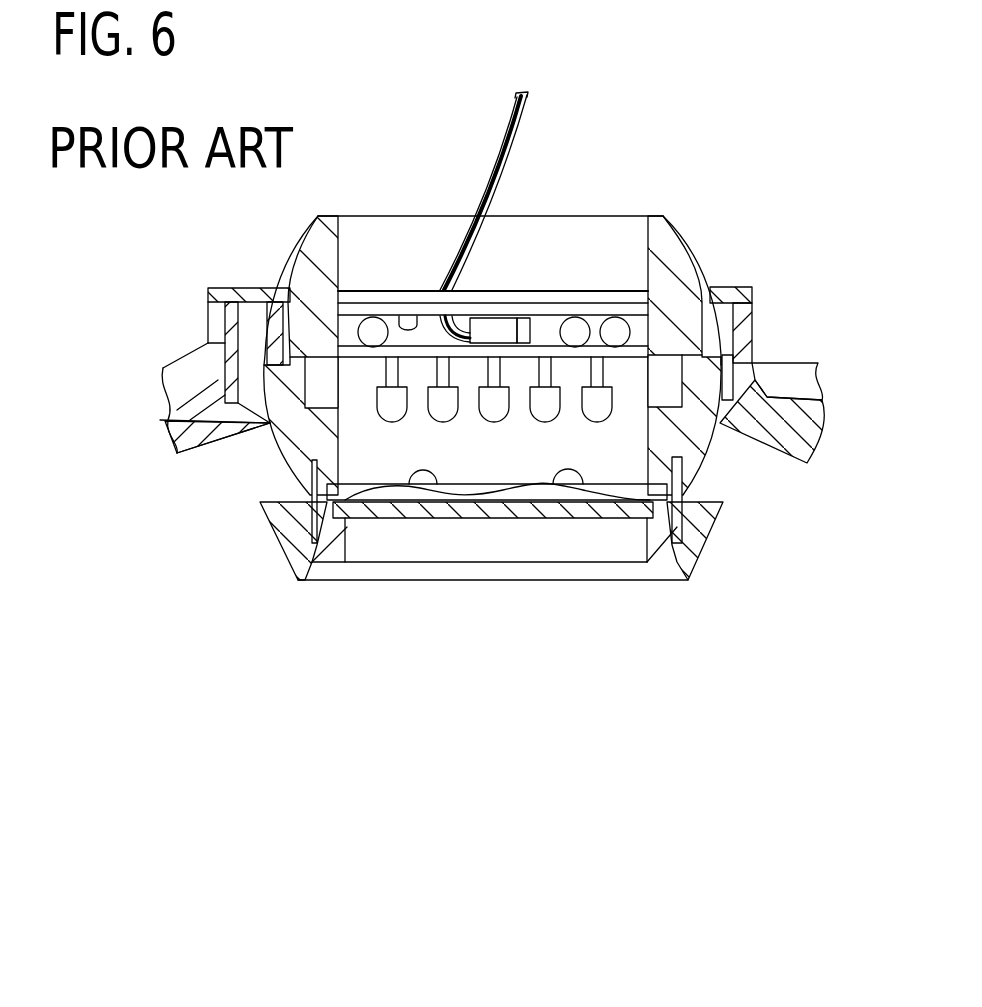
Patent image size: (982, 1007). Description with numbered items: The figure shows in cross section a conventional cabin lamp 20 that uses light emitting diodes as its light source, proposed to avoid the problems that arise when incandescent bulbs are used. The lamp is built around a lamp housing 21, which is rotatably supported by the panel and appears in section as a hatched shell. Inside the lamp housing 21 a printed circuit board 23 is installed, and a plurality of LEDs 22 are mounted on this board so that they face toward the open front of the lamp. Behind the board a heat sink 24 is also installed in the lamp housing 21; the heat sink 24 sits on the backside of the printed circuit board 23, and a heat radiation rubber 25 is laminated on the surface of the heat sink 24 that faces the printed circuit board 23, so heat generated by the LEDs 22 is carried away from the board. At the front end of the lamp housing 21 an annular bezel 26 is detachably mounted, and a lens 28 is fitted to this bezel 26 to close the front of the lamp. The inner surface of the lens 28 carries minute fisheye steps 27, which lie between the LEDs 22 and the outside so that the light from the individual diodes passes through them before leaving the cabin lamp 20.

The cabin lamp 20 is at (529, 458).
The lamp housing 21 is at (688, 259).
The LEDs 22 is at (390, 420).
The printed circuit board 23 is at (530, 352).
The heat sink 24 is at (603, 292).
The heat radiation rubber 25 is at (413, 316).
The annular bezel 26 is at (697, 547).
The fisheye steps 27 is at (422, 486).
The lens 28 is at (525, 512).